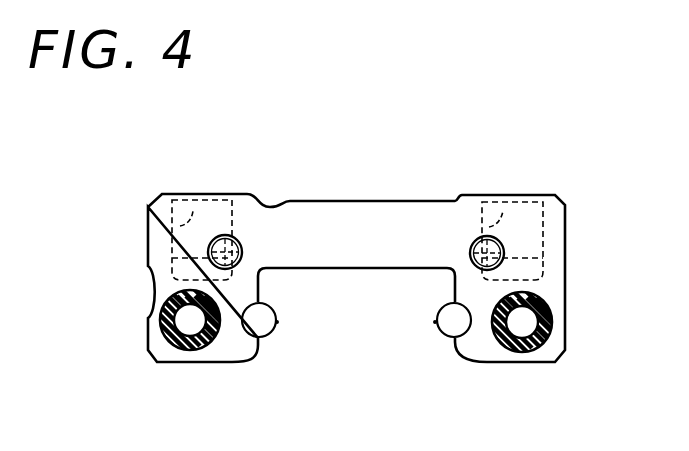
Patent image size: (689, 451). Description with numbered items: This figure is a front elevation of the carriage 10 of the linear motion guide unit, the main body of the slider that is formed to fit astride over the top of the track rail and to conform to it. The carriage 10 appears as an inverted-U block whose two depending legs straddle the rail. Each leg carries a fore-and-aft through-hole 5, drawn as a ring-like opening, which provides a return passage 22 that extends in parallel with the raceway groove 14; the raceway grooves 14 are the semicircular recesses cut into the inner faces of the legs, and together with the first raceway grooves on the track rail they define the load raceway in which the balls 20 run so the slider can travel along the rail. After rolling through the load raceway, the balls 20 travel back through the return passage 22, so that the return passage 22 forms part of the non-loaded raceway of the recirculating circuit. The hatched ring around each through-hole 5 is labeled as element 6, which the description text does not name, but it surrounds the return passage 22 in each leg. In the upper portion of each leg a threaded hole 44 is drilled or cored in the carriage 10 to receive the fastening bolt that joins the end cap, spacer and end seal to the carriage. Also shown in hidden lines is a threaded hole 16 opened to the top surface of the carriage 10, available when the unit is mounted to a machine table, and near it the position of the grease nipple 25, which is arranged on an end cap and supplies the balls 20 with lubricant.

The carriage 10 is at (364, 214).
The threaded hole 16 is at (182, 190).
The grease nipple 25 is at (235, 192).
The threaded hole 44 is at (215, 249).
The bushing 6 is at (162, 327).
The fore-and-aft through-hole 5 is at (209, 338).
The return passage 22 is at (189, 325).
The raceway groove 14 is at (245, 316).
The ball 20 is at (268, 316).